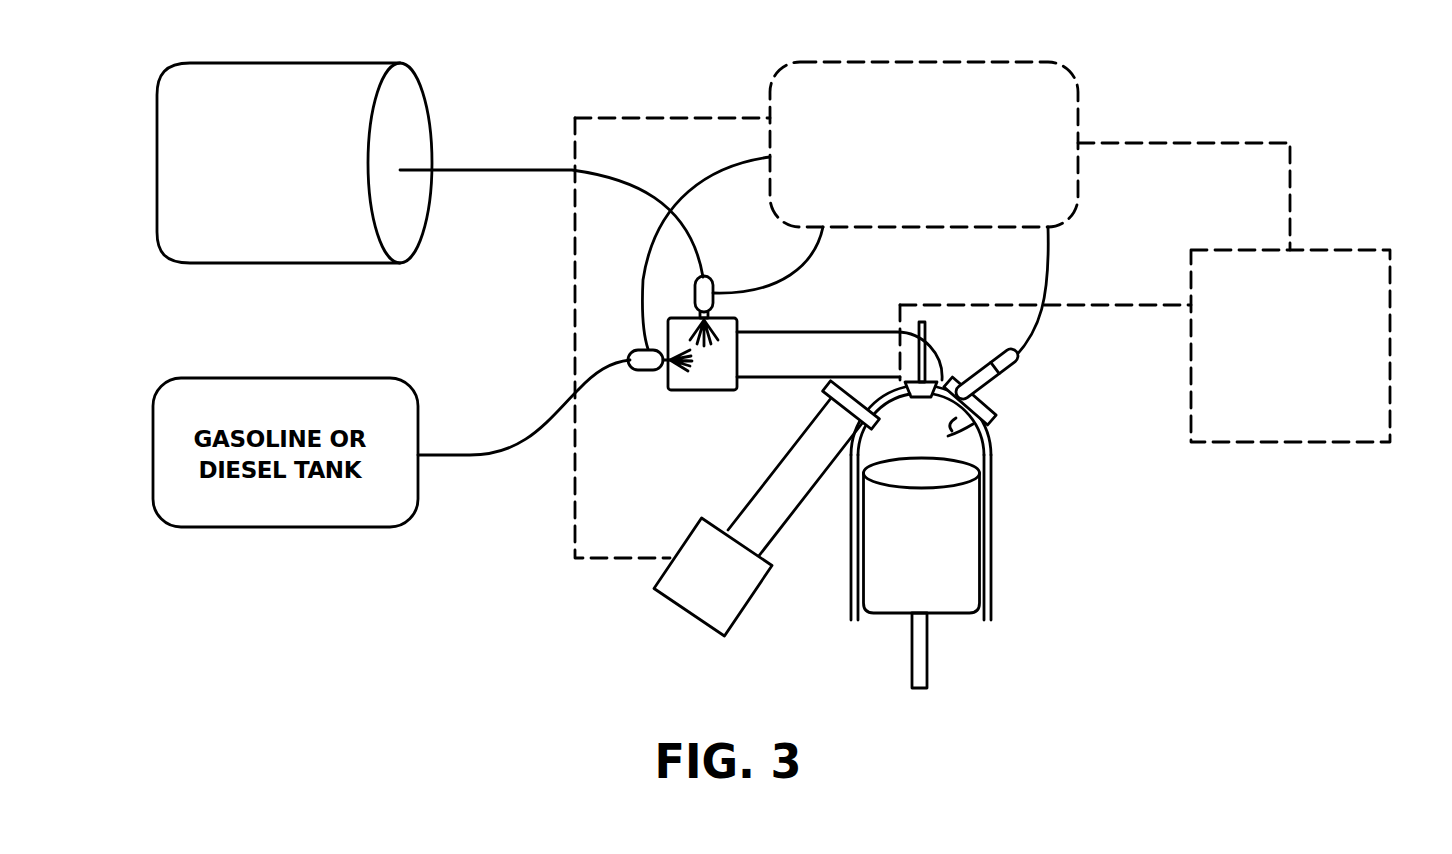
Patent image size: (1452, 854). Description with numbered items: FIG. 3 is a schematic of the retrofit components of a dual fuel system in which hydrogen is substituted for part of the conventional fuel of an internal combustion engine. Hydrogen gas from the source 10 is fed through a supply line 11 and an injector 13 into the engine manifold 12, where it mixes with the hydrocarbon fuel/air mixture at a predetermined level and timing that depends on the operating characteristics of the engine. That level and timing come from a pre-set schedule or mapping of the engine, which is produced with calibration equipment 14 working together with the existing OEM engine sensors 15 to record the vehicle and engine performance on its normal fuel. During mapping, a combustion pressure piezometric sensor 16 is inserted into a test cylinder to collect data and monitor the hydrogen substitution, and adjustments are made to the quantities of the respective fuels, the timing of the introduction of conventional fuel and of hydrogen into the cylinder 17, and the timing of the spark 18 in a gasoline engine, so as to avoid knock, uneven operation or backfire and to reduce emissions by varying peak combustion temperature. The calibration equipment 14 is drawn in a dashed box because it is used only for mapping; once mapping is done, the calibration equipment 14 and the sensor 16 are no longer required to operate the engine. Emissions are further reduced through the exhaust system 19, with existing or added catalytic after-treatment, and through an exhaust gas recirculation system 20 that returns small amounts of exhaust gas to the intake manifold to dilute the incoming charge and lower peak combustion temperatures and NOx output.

The source 10 is at (228, 63).
The supply line 11 is at (516, 170).
The engine manifold 12 is at (642, 283).
The injector 13 is at (803, 290).
The calibration equipment 14 is at (1327, 250).
The OEM engine sensors 15 is at (915, 62).
The combustion pressure piezometric sensor 16 is at (900, 400).
The cylinder 17 is at (962, 448).
The spark 18 is at (997, 384).
The exhaust system 19 is at (783, 477).
The exhaust gas recirculation (EGR) system 20 is at (690, 607).